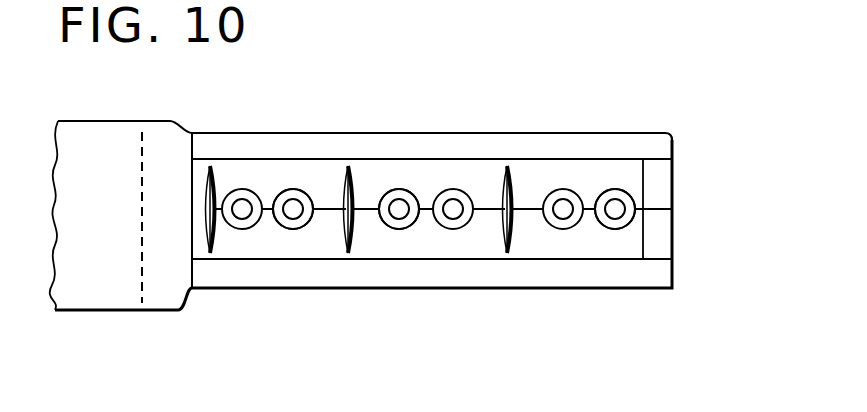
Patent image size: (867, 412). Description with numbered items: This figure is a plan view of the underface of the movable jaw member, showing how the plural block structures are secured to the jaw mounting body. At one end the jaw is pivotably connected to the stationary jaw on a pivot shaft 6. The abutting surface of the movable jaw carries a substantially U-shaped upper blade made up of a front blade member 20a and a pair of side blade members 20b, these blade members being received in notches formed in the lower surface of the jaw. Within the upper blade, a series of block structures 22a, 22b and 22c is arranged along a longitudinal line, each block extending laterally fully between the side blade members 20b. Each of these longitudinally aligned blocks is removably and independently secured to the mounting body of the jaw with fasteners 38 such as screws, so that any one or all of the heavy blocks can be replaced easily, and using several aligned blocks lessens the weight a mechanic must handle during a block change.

The pivot shaft 6 is at (96, 292).
The front blade member 20a is at (661, 194).
The side blade members 20b is at (635, 142).
The block structure 22a is at (268, 180).
The block structure 22b is at (436, 176).
The block structure 22c is at (548, 180).
The fasteners 38 is at (293, 231).